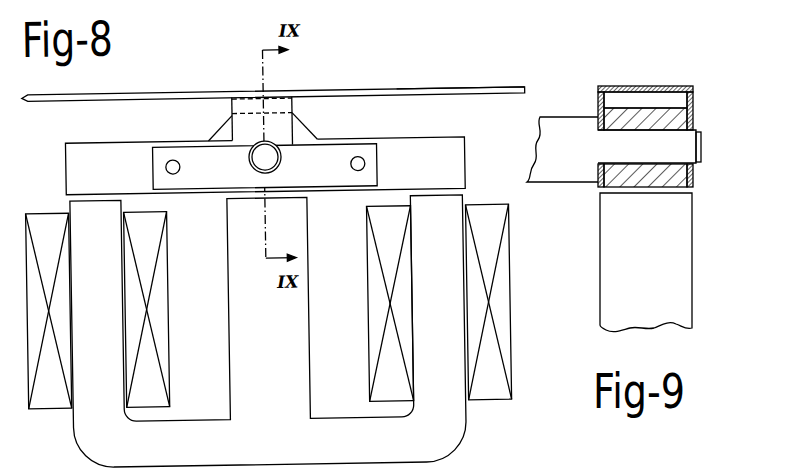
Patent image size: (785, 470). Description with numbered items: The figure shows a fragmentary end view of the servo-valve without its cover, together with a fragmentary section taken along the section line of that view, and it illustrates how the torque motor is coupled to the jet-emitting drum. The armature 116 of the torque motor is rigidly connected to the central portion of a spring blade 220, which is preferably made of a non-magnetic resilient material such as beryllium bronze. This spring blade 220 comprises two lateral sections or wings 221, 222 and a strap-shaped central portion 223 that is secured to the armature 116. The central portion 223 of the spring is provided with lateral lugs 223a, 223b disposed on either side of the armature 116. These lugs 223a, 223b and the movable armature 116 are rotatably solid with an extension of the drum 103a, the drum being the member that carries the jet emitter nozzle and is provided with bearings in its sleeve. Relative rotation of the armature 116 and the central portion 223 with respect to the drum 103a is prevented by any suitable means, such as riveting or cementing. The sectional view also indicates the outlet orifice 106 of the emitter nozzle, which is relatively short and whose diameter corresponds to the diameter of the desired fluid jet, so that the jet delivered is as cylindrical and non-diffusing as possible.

In FIG. 8, the armature 116 is at (426, 152).
In FIG. 8, the lateral section 221 is at (126, 91).
In FIG. 8, the lateral section 222 is at (476, 91).
In FIG. 8, the spring blade 220 is at (281, 87).
In FIG. 9, the spring blade 220 is at (617, 86).
In FIG. 8, the central portion 223 is at (322, 169).
In FIG. 9, the lateral lug 223a is at (598, 97).
In FIG. 9, the lateral lug 223b is at (696, 102).
In FIG. 8, the drum 103a is at (272, 153).
In FIG. 9, the drum 103a is at (557, 172).
In FIG. 9, the outlet orifice 106 is at (627, 178).